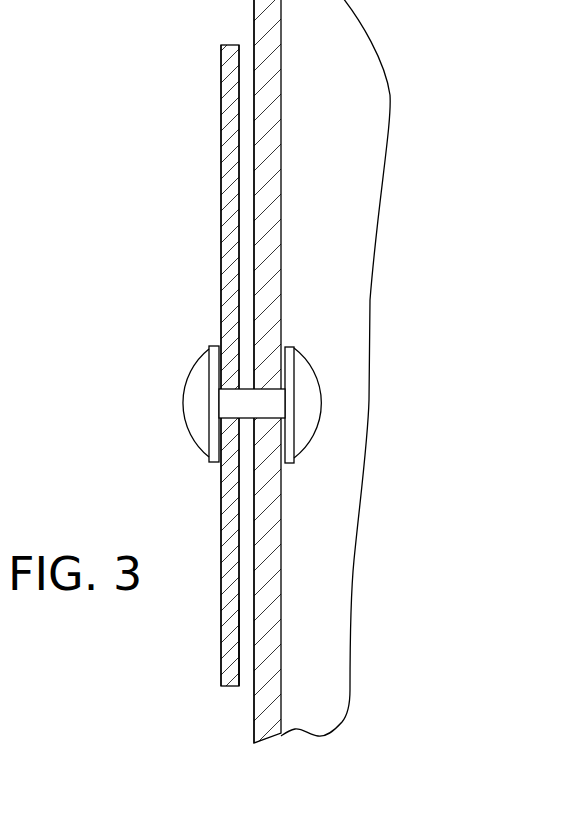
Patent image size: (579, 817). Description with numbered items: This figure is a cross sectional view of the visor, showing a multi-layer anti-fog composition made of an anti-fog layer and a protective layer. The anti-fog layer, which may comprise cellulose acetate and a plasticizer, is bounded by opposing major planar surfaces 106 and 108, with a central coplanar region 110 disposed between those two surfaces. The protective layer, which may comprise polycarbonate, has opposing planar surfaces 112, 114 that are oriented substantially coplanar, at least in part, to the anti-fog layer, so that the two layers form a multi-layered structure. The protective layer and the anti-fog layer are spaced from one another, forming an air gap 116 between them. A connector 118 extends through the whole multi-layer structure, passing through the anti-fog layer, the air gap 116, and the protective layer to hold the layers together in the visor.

The major planar surface 106 is at (221, 183).
The major planar surface 108 is at (240, 612).
The central coplanar region 110 is at (221, 300).
The planar surface 112 is at (254, 16).
The planar surface 114 is at (282, 65).
The air gap 116 is at (248, 237).
The connector 118 is at (208, 414).